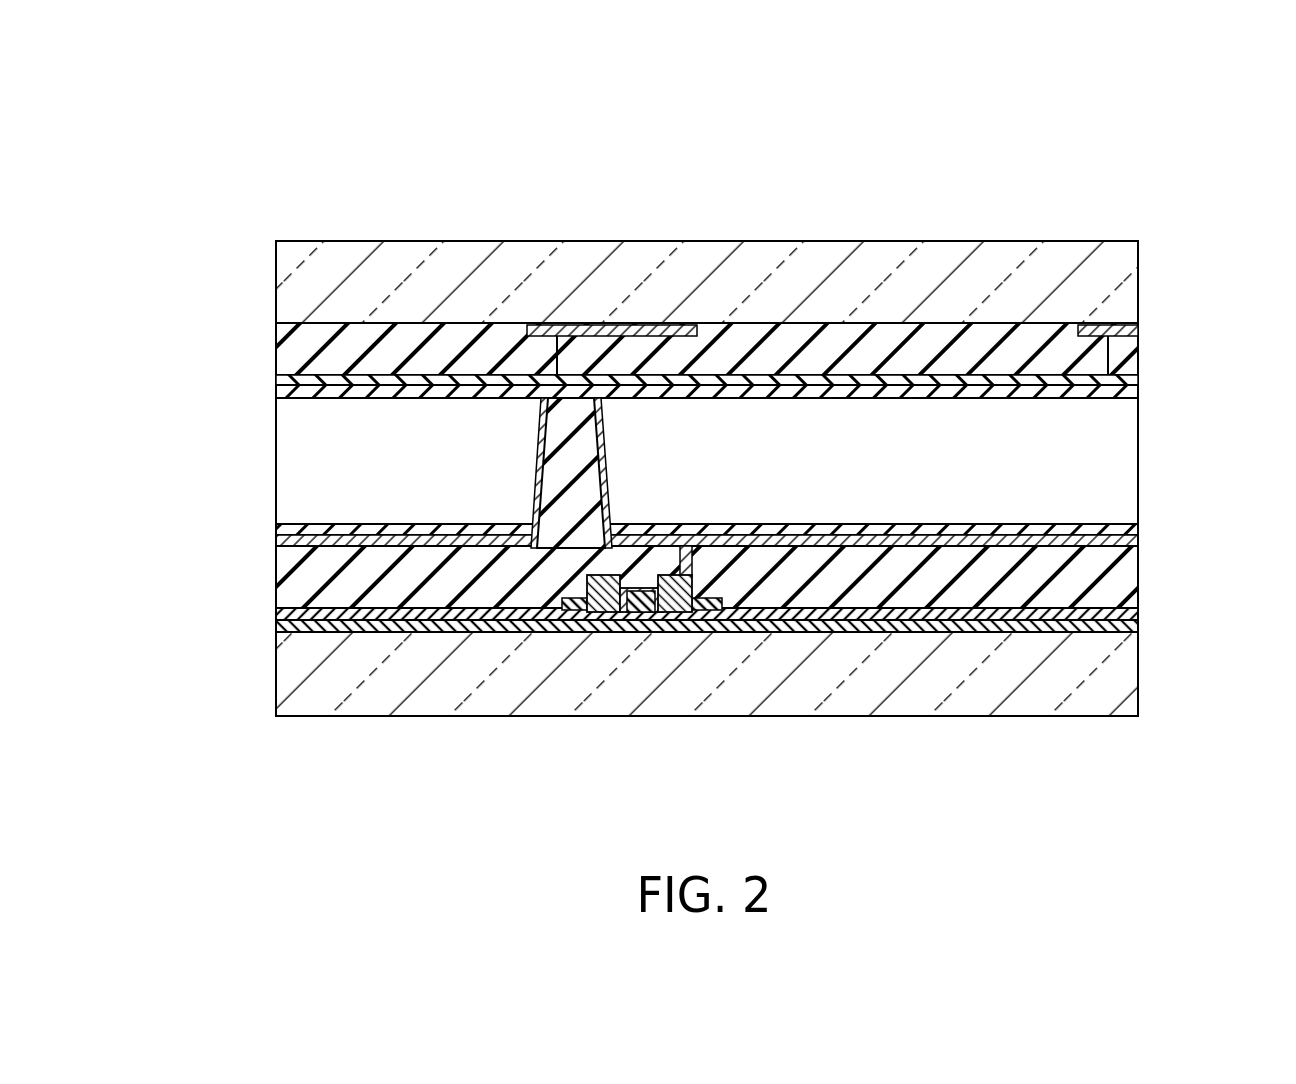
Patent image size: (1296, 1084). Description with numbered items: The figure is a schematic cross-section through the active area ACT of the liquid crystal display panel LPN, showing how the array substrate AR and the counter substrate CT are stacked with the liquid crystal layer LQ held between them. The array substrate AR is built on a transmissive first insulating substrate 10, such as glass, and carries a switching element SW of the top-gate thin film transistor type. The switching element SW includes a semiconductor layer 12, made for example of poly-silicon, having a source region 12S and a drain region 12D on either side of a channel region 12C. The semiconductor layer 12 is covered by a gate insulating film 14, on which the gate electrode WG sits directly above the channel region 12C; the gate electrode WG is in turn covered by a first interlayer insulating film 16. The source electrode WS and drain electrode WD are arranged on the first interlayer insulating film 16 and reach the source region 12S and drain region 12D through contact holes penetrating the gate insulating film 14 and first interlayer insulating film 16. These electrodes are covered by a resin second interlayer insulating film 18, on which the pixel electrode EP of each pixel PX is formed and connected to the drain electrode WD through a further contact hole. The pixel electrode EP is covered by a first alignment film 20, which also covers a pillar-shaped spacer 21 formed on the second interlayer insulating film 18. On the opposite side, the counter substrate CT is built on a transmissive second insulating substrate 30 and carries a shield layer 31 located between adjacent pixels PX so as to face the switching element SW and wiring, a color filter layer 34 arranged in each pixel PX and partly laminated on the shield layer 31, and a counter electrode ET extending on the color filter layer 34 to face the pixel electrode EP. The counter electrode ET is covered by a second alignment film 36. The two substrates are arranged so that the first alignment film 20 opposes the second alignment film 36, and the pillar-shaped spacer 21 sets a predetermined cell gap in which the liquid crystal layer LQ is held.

The liquid crystal display panel LPN is at (1155, 476).
The counter substrate CT is at (265, 262).
The array substrate AR is at (262, 697).
The active area ACT is at (1140, 148).
The pixel PX is at (1116, 222).
The second insulating substrate 30 is at (284, 298).
The shield layer 31 is at (631, 336).
The color filter layer 34 is at (375, 372).
The second alignment film 36 is at (280, 392).
The counter electrode ET is at (278, 378).
The liquid crystal layer LQ is at (286, 465).
The pillar-shaped spacer 21 is at (560, 438).
The pixel electrode EP is at (367, 530).
The first alignment film 20 is at (284, 531).
The second interlayer insulating film 18 is at (286, 566).
The first interlayer insulating film 16 is at (282, 616).
The gate insulating film 14 is at (284, 624).
The first insulating substrate 10 is at (286, 662).
The semiconductor layer 12 is at (606, 653).
The source region 12S is at (603, 634).
The channel region 12C is at (636, 634).
The drain region 12D is at (694, 672).
The switching element SW is at (588, 645).
The source electrode WS is at (587, 580).
The gate electrode WG is at (634, 590).
The drain electrode WD is at (686, 548).